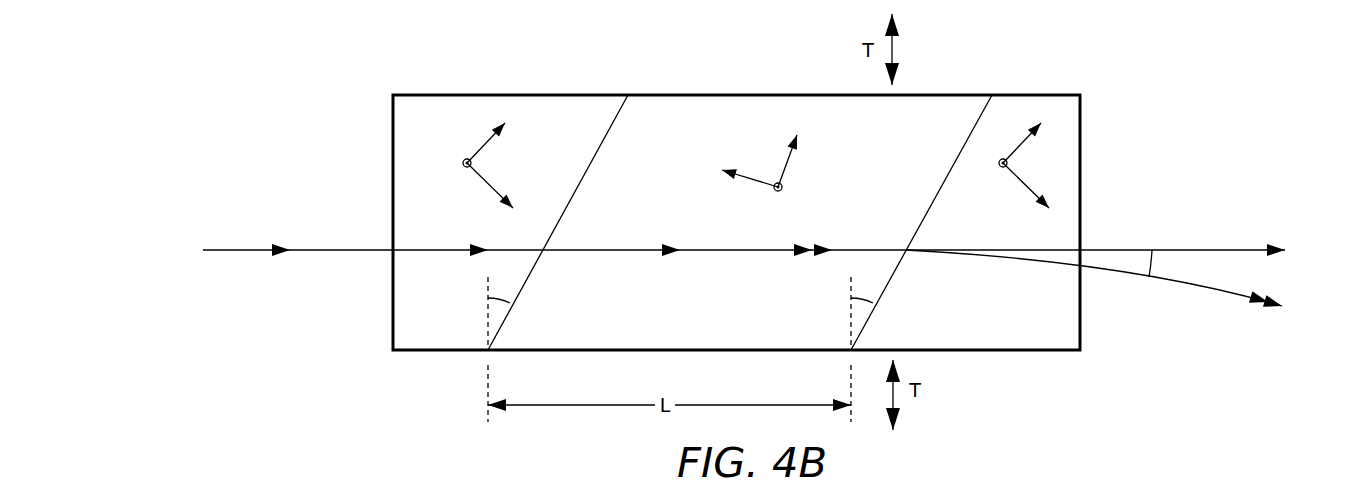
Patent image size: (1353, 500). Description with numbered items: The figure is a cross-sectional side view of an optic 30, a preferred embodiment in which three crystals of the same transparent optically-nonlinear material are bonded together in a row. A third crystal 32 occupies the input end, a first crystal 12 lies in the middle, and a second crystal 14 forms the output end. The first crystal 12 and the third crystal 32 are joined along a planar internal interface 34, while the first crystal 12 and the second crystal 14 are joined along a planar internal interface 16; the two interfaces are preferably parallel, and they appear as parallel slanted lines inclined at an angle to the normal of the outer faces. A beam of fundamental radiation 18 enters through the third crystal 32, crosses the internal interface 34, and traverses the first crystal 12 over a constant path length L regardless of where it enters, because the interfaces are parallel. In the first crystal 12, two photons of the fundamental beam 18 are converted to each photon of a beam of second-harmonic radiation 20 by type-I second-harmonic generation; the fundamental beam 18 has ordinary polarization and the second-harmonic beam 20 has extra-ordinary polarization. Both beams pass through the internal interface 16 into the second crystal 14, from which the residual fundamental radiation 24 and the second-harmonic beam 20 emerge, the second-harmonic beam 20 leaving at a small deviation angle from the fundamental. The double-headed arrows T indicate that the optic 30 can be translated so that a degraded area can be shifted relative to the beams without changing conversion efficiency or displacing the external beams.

The optic 30 is at (253, 78).
The third crystal 32 is at (434, 319).
The first crystal 12 is at (690, 319).
The second crystal 14 is at (968, 319).
The planar internal interface 34 is at (607, 130).
The planar internal interface 16 is at (972, 128).
The beam of fundamental radiation 18 is at (242, 247).
The undeflected output beam 24 is at (1212, 248).
The beam of second-harmonic radiation 20 is at (1193, 292).